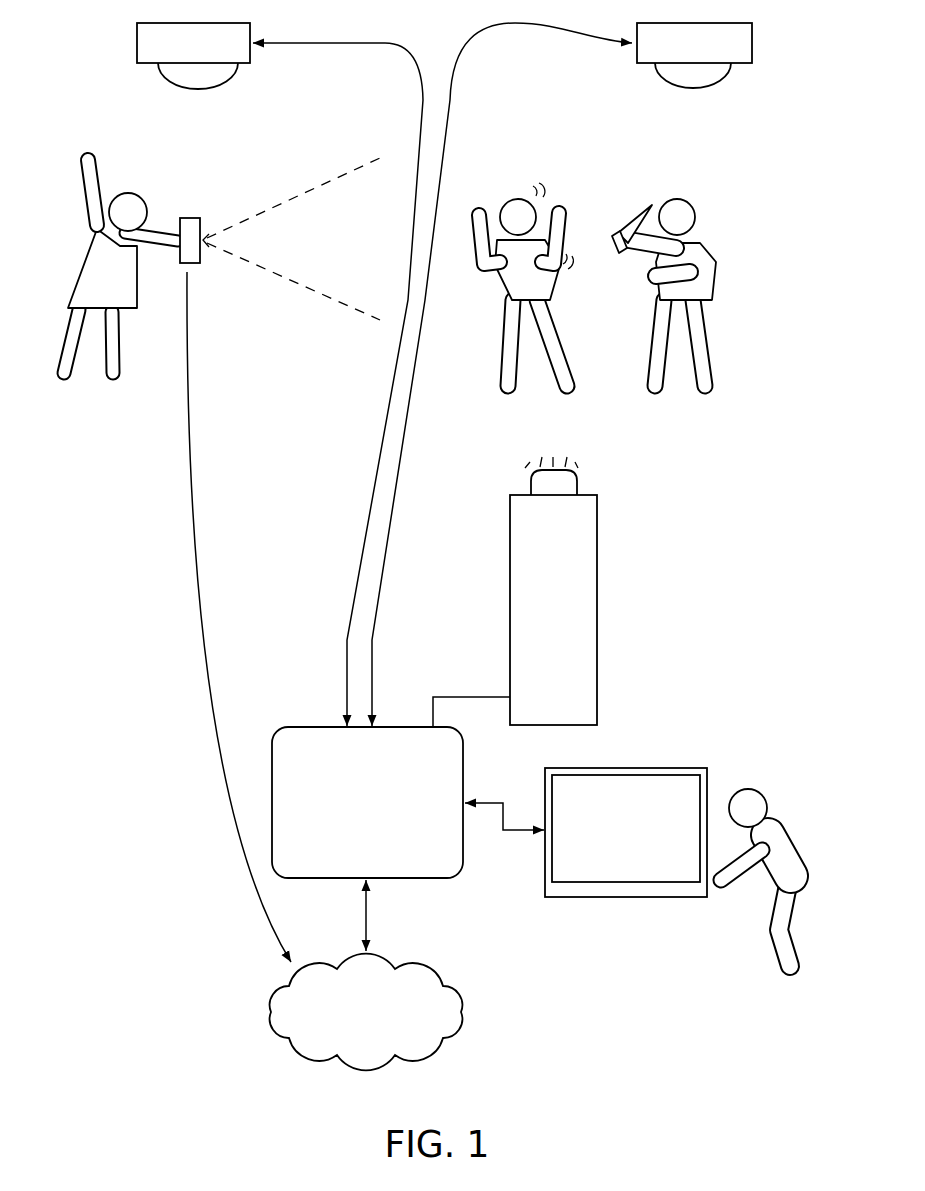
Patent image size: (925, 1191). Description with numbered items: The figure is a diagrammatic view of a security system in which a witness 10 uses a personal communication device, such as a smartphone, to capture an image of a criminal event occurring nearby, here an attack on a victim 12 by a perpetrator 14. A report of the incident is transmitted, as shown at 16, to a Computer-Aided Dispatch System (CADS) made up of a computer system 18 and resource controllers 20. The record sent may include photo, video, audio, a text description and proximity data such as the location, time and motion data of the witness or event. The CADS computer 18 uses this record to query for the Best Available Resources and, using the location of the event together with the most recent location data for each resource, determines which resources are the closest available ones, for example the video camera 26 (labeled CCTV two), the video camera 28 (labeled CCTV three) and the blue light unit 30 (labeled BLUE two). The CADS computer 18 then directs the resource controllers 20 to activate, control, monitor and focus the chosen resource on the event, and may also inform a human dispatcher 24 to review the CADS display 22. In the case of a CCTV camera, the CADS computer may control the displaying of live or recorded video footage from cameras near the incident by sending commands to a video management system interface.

The witness 10 is at (64, 184).
The victim 12 is at (492, 181).
The perpetrator 14 is at (709, 196).
The report of the incident 16 is at (215, 706).
The computer system 18 is at (262, 1010).
The resource controllers 20 is at (287, 727).
The CADS display 22 is at (677, 768).
The human dispatcher 24 is at (788, 800).
The video camera 26 is at (135, 43).
The video camera 28 is at (755, 43).
The blue light unit 30 is at (599, 612).